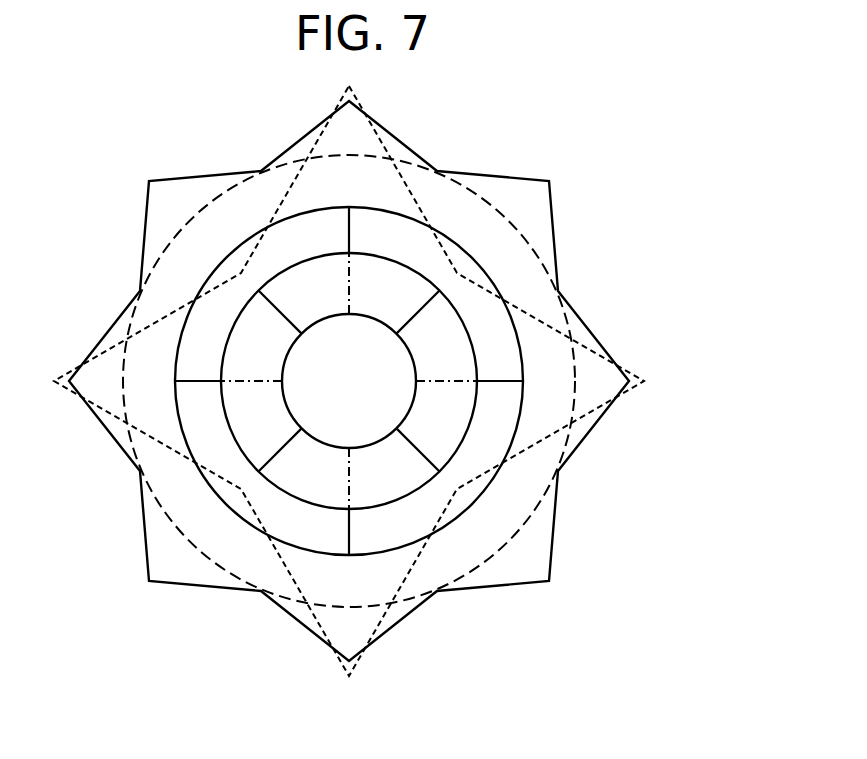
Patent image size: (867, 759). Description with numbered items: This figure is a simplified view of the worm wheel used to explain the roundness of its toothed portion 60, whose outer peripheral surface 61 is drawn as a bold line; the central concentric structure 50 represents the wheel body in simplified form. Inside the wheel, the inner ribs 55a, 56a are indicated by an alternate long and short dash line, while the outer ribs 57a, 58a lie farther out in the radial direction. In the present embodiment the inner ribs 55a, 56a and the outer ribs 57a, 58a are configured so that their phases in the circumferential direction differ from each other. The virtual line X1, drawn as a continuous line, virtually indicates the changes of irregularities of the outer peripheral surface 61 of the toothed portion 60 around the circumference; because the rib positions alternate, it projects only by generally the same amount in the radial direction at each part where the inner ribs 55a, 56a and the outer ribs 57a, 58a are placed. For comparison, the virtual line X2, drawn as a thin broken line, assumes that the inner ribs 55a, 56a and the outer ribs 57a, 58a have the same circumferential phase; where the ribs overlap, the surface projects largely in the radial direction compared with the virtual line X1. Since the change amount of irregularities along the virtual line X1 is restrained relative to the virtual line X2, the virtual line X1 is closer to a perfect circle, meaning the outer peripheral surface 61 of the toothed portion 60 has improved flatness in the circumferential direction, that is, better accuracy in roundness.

The rotor body 50 is at (498, 283).
The inner rib 55a is at (467, 381).
The inner rib 56a is at (423, 318).
The outer rib 57a is at (474, 381).
The outer rib 58a is at (504, 382).
The toothed portion 60 is at (468, 187).
The outer peripheral surface 61 is at (374, 129).
The virtual line X1 is at (600, 339).
The virtual line X2 is at (353, 379).